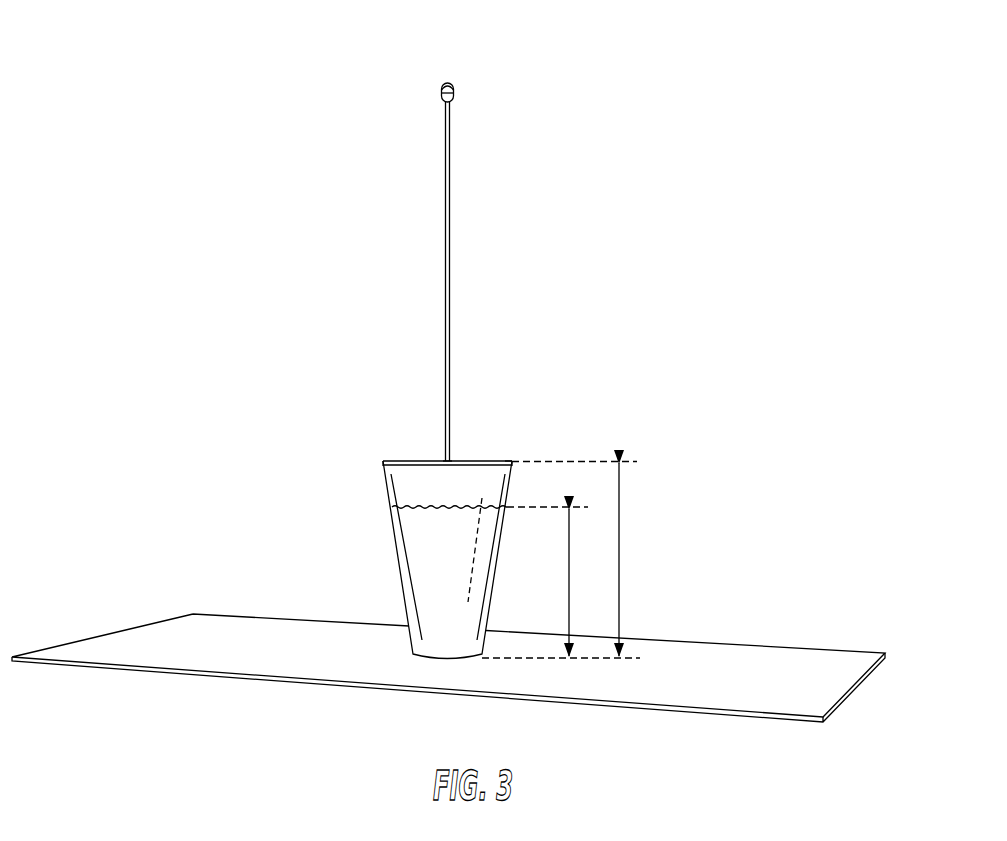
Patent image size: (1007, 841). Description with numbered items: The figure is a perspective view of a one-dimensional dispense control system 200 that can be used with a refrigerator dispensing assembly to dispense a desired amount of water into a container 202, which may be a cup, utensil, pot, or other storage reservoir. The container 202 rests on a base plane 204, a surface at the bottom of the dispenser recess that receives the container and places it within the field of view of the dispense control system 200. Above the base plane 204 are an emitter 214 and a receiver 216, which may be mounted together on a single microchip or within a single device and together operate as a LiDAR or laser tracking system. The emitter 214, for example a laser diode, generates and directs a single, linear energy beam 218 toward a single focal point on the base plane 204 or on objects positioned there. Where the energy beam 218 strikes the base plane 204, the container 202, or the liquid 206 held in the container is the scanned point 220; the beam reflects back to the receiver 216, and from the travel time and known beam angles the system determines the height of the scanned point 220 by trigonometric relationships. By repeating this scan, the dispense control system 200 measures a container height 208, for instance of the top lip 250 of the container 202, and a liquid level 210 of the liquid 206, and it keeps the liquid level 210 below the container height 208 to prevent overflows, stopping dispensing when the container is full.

The dispense control system 200 is at (642, 98).
The container 202 is at (396, 548).
The base plane 204 is at (252, 684).
The liquid 206 is at (453, 545).
The container height 208 is at (620, 556).
The liquid level 210 is at (567, 576).
The emitter 214 is at (440, 99).
The receiver 216 is at (456, 100).
The energy beam 218 is at (450, 283).
The scanned point 220 is at (443, 460).
The top lip 250 is at (508, 460).